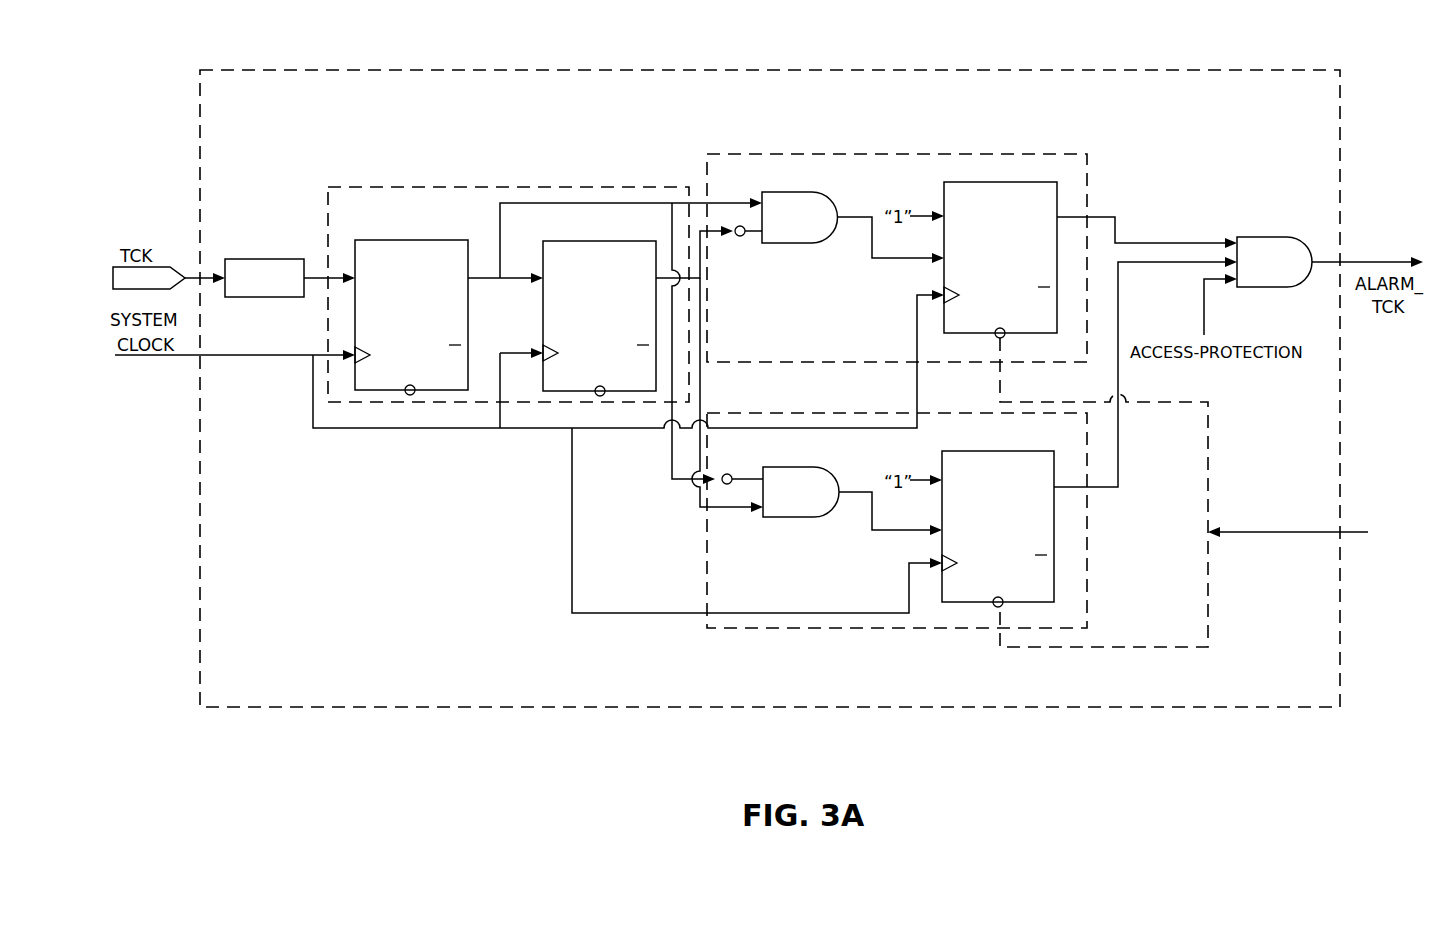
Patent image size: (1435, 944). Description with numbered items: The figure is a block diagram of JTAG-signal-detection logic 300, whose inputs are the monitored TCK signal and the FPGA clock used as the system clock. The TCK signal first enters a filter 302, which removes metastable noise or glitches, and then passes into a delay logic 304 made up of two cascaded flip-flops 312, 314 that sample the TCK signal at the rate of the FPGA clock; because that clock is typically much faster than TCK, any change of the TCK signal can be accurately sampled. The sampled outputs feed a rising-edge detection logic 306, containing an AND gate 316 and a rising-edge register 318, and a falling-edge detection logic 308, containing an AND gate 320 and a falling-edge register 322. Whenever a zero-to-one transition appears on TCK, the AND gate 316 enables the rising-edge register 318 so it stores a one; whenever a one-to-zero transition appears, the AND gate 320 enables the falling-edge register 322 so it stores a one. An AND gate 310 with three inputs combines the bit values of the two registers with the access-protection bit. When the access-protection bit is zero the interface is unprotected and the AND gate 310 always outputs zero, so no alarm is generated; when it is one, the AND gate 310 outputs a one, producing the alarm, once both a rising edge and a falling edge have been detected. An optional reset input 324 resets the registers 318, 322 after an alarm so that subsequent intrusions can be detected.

The JTAG-signal-detection logic 300 is at (200, 100).
The filter 302 is at (262, 259).
The delay logic 304 is at (452, 187).
The rising-edge detection logic 306 is at (848, 154).
The falling-edge detection logic 308 is at (868, 628).
The AND gate 310 is at (1262, 237).
The flip-flop 312 is at (411, 317).
The flip-flop 314 is at (599, 318).
The AND gate 316 is at (783, 243).
The rising-edge register 318 is at (1000, 260).
The AND gate 320 is at (840, 481).
The falling-edge register 322 is at (998, 529).
The reset input 324 is at (1262, 532).